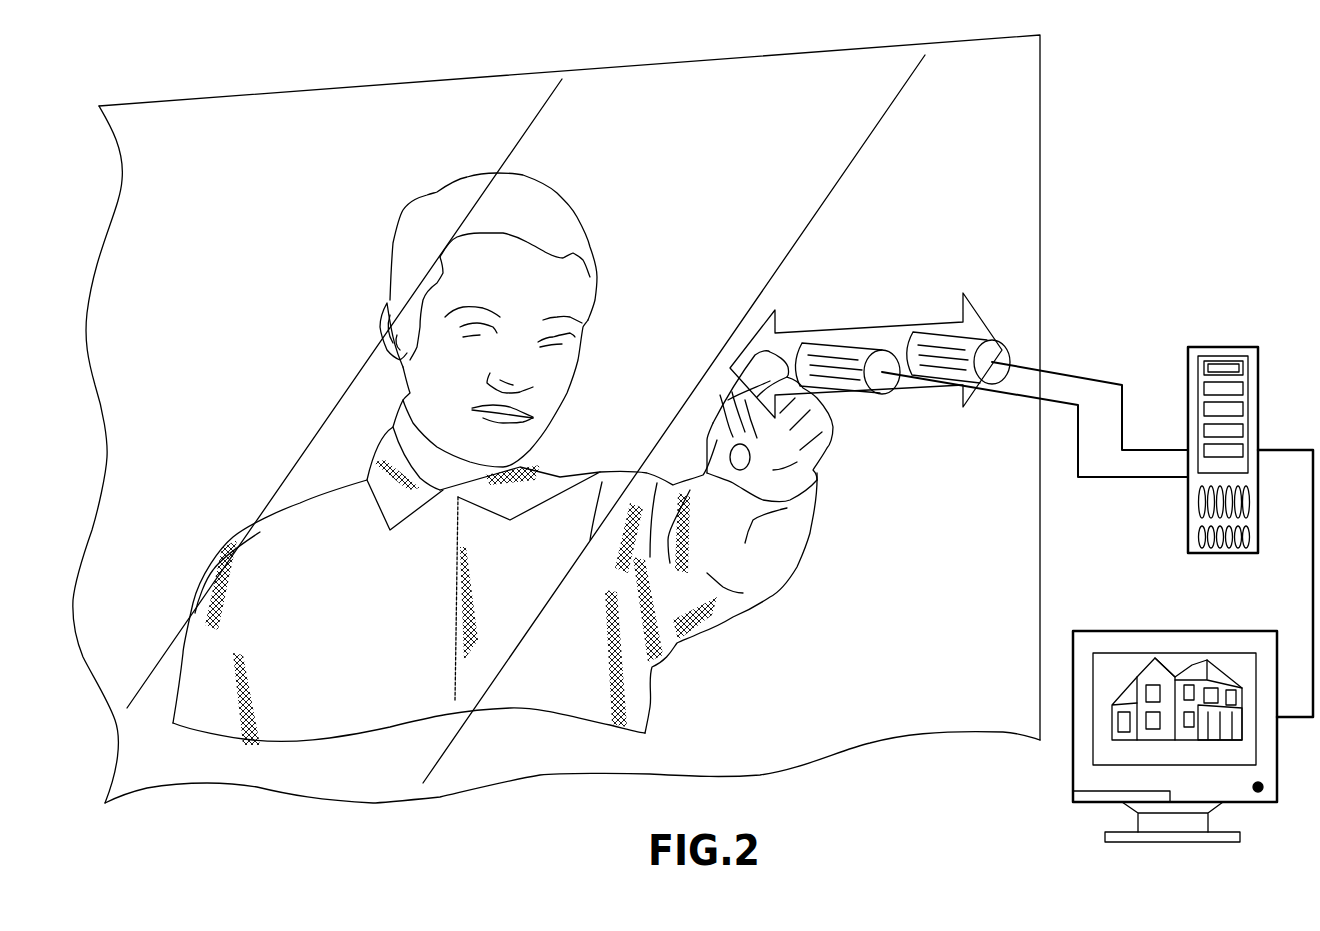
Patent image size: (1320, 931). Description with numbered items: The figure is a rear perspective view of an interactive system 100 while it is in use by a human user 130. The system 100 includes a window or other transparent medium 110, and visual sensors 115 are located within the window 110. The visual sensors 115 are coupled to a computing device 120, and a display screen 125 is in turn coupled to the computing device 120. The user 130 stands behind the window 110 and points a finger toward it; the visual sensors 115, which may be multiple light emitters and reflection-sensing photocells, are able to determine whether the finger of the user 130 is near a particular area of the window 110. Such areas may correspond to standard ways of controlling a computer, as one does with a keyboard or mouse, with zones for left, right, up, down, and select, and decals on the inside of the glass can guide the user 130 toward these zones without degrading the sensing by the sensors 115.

The interactive system 100 is at (1219, 92).
The window 110 is at (1042, 172).
The visual sensors 115 is at (830, 340).
The computing device 120 is at (1228, 347).
The display screen 125 is at (1103, 631).
The human user 130 is at (583, 222).